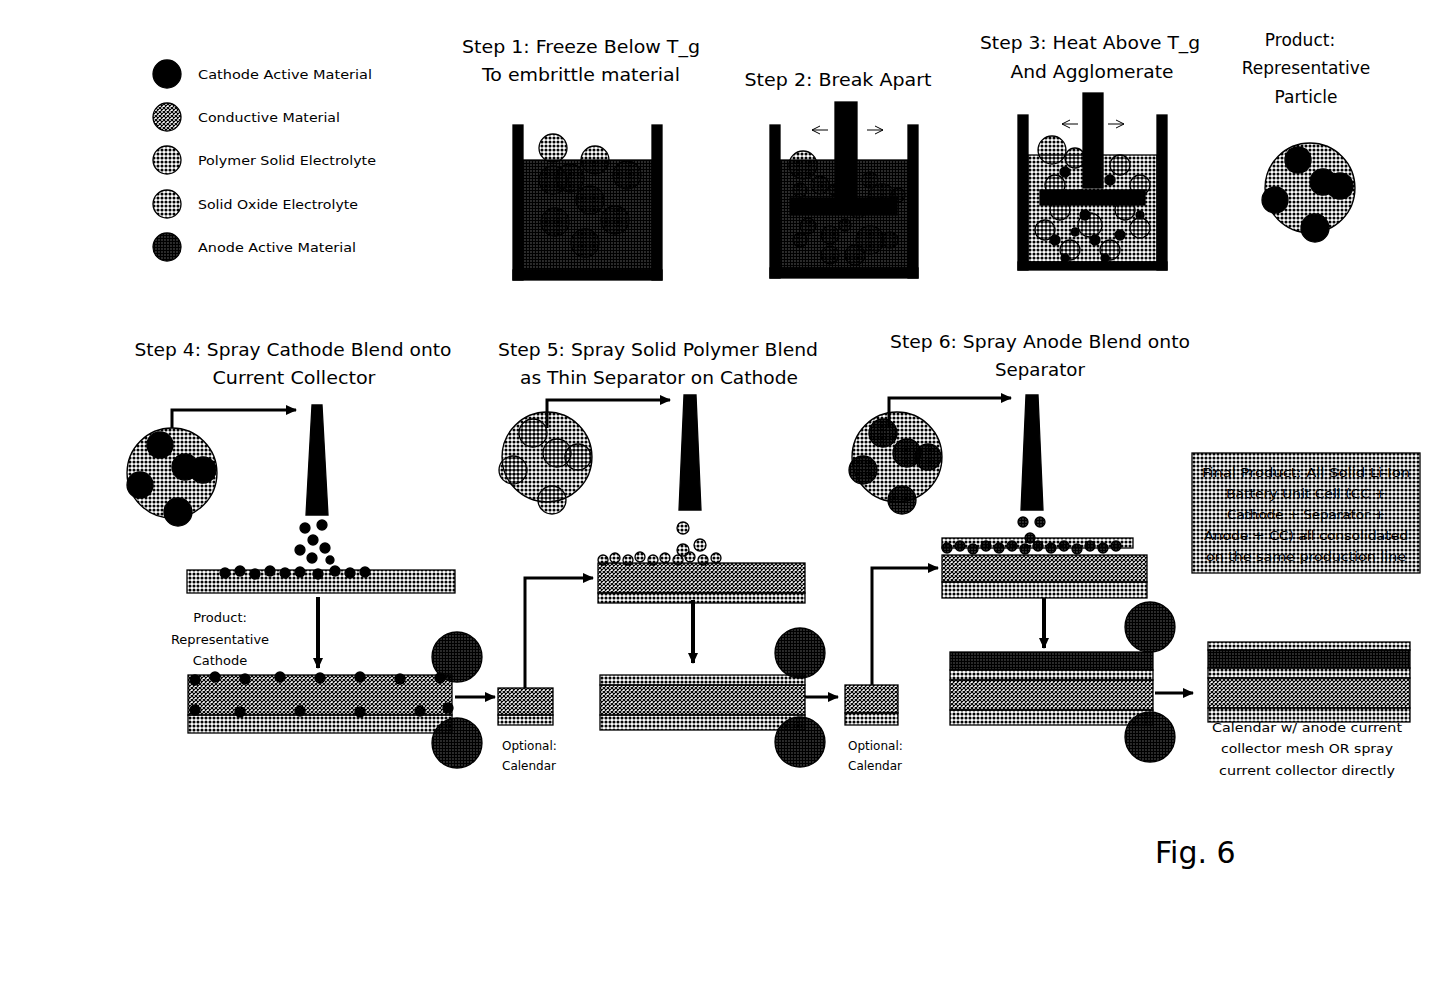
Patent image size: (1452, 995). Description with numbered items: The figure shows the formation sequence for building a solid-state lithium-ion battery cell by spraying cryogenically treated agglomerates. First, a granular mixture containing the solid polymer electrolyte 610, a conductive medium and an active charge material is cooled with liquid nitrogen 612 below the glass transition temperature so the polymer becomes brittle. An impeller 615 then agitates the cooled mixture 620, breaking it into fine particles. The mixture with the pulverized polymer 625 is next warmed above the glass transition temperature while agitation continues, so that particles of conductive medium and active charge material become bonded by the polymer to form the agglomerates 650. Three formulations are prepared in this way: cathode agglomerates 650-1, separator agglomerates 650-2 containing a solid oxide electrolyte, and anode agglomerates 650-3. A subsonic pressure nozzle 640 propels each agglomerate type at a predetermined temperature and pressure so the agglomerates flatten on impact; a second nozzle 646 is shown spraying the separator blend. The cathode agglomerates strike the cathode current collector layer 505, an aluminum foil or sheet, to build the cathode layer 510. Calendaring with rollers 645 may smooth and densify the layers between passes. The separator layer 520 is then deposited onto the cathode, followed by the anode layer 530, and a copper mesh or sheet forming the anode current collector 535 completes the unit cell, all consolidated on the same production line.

The solid polymer electrolyte 610 is at (606, 143).
The liquid nitrogen 612 is at (537, 165).
The impeller 615 is at (828, 128).
The cooled mixture 620 is at (881, 158).
The pulverized polymer 625 is at (1135, 155).
The agglomerates 650 is at (1358, 192).
The cathode agglomerates 650-1 is at (240, 525).
The separator agglomerates 650-2 is at (588, 472).
The anode agglomerates 650-3 is at (940, 467).
The subsonic pressure nozzle 640 is at (331, 492).
The spray nozzle for separator 646 is at (705, 470).
The rollers 645 is at (446, 635).
The cathode current collector layer 505 is at (281, 735).
The cathode layer 510 is at (183, 702).
The separator layer 520 is at (653, 675).
The anode layer 530 is at (997, 648).
The anode current collector 535 is at (1323, 640).